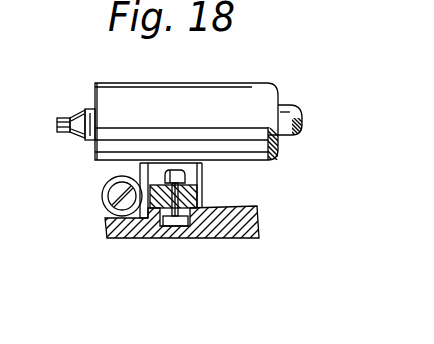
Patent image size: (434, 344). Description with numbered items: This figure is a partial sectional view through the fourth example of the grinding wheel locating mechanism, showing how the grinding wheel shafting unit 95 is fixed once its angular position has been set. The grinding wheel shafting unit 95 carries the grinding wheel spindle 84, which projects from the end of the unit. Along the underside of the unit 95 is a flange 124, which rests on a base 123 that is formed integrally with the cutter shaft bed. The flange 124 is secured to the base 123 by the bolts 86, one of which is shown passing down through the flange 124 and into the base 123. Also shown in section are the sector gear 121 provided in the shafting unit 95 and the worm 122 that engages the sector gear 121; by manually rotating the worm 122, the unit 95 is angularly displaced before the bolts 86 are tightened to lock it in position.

The grinding wheel shafting unit 95 is at (256, 92).
The grinding wheel spindle 84 is at (292, 110).
The worm 122 is at (104, 188).
The flange 124 is at (200, 184).
The bolts 86 is at (165, 235).
The base 123 is at (228, 232).
The sector gear 121 is at (133, 238).